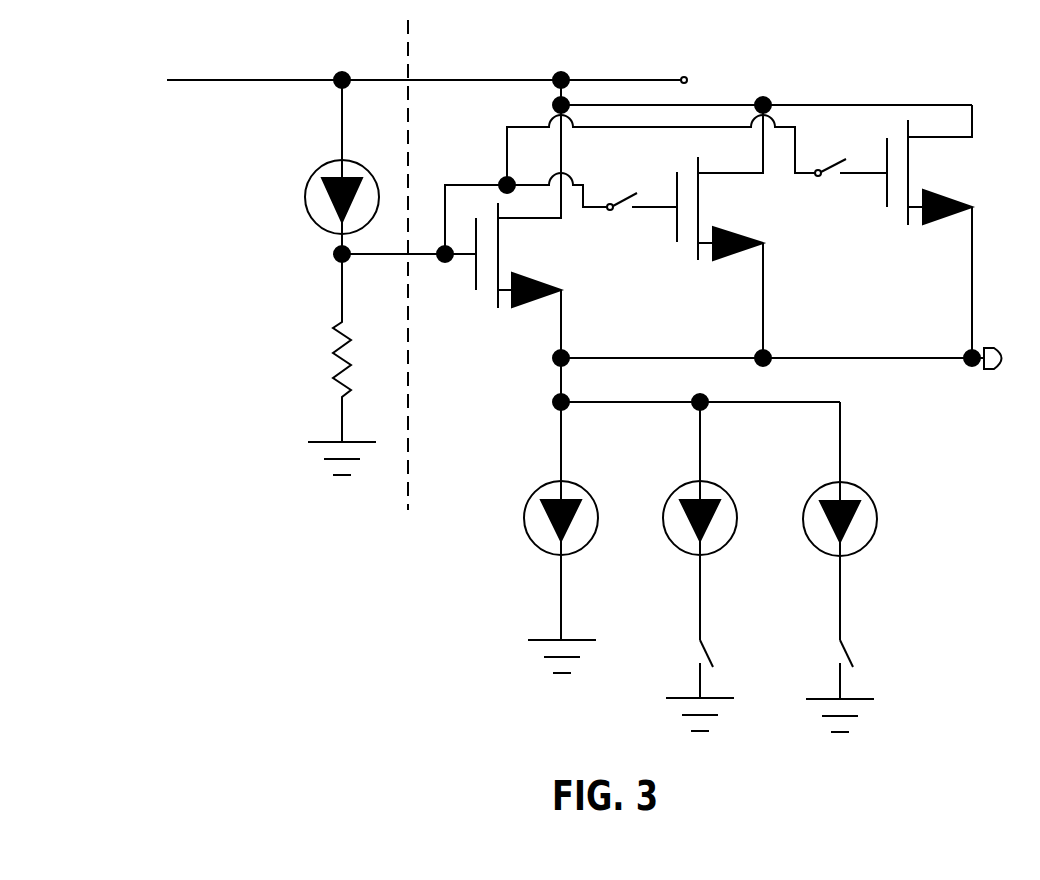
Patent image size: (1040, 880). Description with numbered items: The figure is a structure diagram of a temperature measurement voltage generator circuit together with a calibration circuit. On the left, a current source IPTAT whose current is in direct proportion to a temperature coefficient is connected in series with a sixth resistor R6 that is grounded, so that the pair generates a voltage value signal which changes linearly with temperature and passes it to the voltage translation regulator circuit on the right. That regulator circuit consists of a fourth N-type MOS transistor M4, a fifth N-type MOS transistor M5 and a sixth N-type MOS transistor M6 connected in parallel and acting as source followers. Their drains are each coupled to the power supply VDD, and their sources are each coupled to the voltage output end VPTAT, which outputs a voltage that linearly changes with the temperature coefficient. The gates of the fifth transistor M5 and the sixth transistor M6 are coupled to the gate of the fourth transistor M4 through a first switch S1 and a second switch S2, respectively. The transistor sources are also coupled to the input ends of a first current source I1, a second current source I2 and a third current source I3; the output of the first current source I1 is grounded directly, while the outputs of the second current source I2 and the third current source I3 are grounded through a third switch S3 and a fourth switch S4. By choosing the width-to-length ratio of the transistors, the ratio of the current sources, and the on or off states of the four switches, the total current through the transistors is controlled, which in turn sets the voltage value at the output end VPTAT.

The current source in direct proportion to a temperature coefficient IPTAT is at (304, 167).
The sixth resistor R6 is at (333, 364).
The fourth N-type MOS transistor M4 is at (503, 231).
The fifth N-type MOS transistor M5 is at (720, 231).
The sixth N-type MOS transistor M6 is at (929, 231).
The first switch S1 is at (640, 218).
The second switch S2 is at (851, 189).
The third switch S3 is at (697, 680).
The fourth switch S4 is at (836, 681).
The first current source I1 is at (547, 537).
The second current source I2 is at (685, 521).
The third current source I3 is at (824, 521).
The power supply VDD is at (710, 78).
The voltage output end VPTAT is at (988, 375).